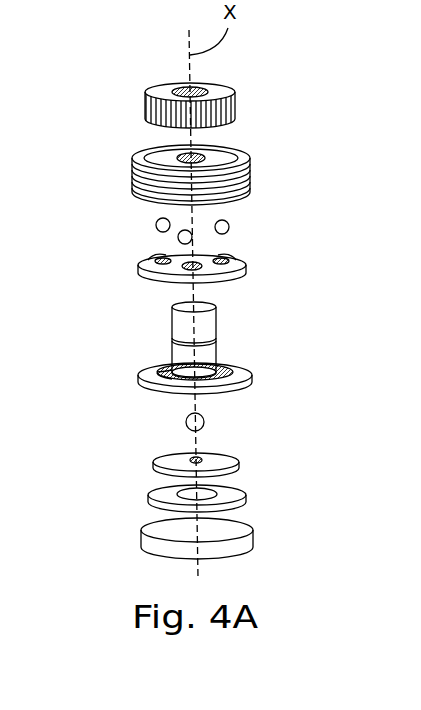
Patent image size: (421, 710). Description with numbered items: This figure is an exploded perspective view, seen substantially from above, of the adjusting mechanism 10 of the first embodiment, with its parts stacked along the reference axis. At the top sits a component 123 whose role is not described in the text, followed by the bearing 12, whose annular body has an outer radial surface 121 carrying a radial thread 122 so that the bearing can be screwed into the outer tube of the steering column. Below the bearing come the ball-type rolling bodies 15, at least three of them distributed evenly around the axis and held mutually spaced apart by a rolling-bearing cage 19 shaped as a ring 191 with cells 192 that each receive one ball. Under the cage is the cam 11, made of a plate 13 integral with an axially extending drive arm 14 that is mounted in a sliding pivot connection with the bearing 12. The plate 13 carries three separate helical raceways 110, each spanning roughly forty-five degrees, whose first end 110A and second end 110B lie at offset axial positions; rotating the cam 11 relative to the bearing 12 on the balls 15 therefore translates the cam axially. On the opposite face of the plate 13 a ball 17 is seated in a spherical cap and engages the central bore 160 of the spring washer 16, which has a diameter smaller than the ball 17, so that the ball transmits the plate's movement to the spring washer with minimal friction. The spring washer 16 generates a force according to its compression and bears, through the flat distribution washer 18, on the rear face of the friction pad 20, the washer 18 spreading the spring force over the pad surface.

The adjusting mechanism 10 is at (107, 118).
The knurled cap 123 is at (228, 150).
The bearing 12 is at (186, 173).
The outer radial surface 121 is at (135, 178).
The radial thread 122 is at (133, 190).
The rolling bodies 15 is at (235, 227).
The rolling-bearing cage 19 is at (190, 270).
The ring 191 is at (245, 256).
The cells 192 is at (152, 262).
The drive arm 14 is at (218, 330).
The cam 11 is at (192, 386).
The plate 13 is at (243, 392).
The raceways 110 is at (190, 375).
The first end 110A is at (158, 366).
The second end 110B is at (155, 383).
The ball 17 is at (208, 428).
The spring washer 16 is at (200, 471).
The central bore 160 is at (188, 459).
The flat distribution washer 18 is at (180, 495).
The friction pad 20 is at (250, 535).